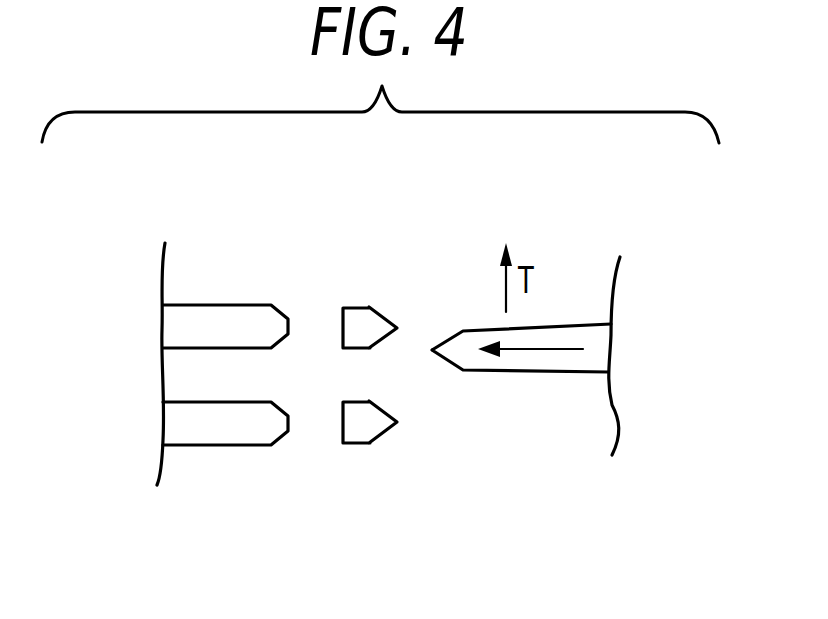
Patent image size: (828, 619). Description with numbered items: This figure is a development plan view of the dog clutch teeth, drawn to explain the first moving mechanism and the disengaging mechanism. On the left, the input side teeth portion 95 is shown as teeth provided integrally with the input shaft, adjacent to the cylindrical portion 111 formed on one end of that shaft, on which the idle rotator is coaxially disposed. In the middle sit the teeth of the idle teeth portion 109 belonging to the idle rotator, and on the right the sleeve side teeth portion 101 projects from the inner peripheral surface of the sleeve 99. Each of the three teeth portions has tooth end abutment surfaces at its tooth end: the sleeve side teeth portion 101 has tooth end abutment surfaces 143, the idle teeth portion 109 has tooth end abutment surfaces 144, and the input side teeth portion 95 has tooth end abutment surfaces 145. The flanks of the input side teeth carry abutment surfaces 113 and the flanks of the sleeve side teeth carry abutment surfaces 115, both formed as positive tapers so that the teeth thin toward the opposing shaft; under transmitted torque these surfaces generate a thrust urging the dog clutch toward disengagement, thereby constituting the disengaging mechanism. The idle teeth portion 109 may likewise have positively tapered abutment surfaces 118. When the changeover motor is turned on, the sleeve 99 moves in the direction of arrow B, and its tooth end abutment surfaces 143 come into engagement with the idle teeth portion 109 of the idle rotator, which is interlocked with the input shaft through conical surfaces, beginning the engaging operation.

The input side teeth portion 95 is at (184, 330).
The sleeve 99 is at (615, 282).
The sleeve side teeth portion 101 is at (600, 352).
The idle teeth portion 109 is at (356, 332).
The cylindrical portion 111 is at (161, 290).
The abutment surfaces 113 is at (213, 400).
The abutment surfaces 115 is at (575, 327).
The abutment surfaces 118 is at (352, 308).
The tooth end abutment surfaces 143 is at (440, 332).
The tooth end abutment surfaces 144 is at (380, 336).
The tooth end abutment surfaces 145 is at (288, 342).